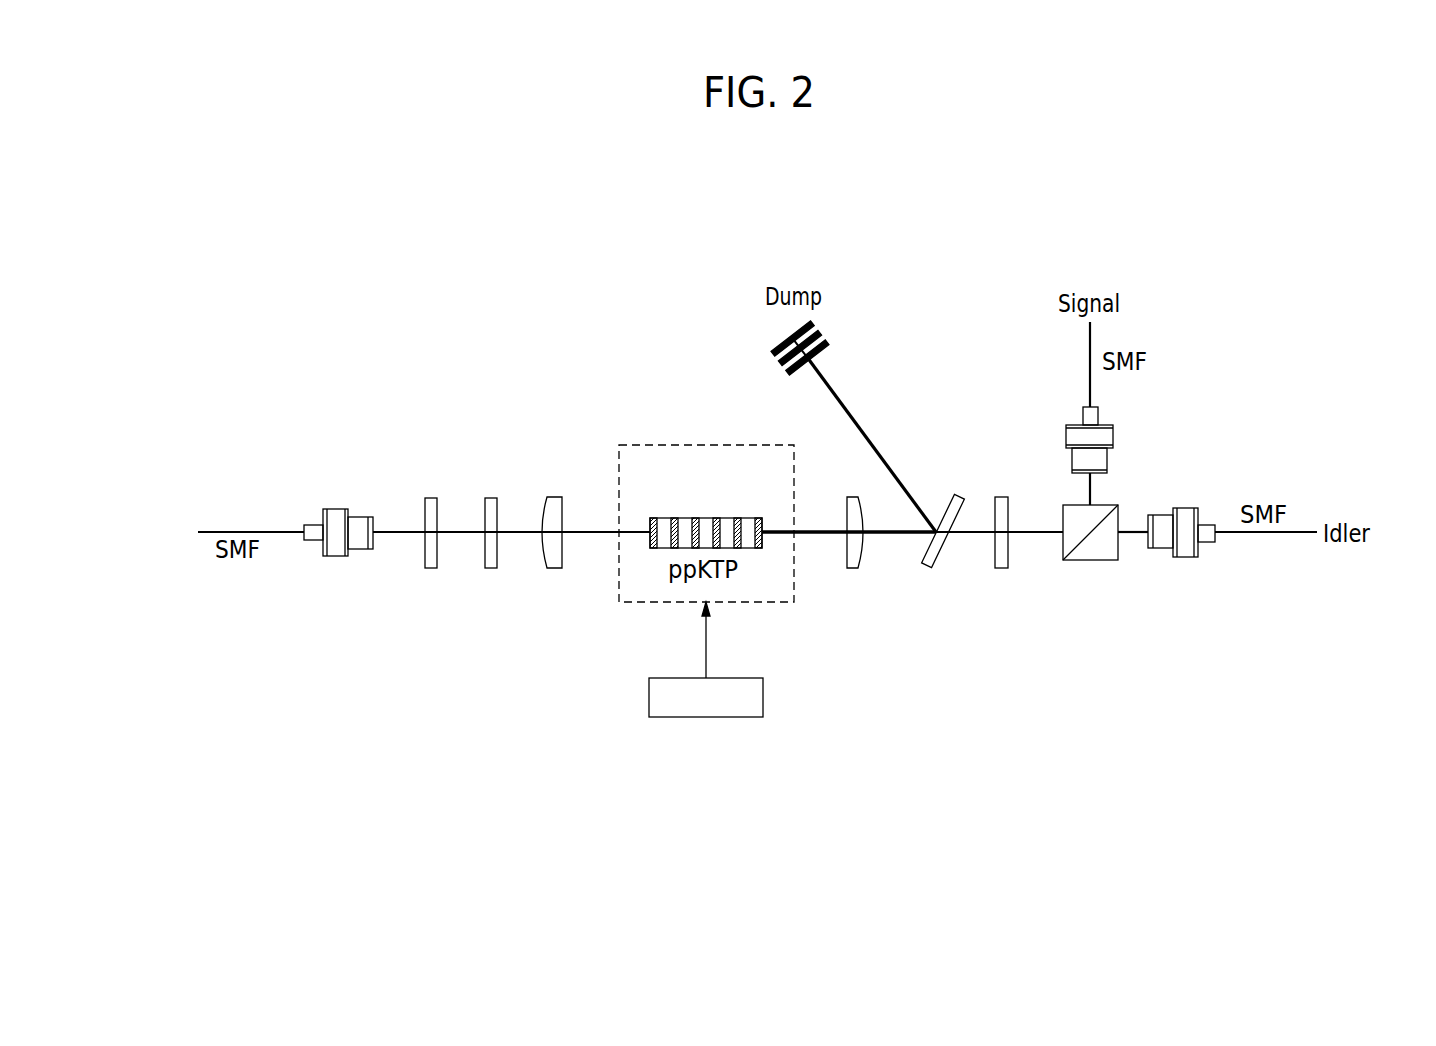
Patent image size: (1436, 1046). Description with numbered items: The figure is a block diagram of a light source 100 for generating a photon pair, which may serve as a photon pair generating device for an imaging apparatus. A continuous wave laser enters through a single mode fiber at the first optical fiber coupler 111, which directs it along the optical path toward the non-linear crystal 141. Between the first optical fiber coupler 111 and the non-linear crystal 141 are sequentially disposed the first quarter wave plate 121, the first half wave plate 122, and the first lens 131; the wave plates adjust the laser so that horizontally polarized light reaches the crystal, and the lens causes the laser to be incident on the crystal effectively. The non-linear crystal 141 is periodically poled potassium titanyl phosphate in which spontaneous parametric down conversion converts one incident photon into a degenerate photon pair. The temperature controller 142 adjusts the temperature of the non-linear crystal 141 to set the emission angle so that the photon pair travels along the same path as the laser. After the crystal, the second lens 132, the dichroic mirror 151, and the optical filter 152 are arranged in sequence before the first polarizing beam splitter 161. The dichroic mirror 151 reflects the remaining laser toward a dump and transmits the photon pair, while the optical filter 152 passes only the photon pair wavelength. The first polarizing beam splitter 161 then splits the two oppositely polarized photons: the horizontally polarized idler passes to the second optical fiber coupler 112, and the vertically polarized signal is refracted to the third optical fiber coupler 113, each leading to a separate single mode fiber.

The light source 100 is at (861, 245).
The first optical fiber coupler 111 is at (335, 508).
The second optical fiber coupler 112 is at (1185, 558).
The third optical fiber coupler 113 is at (1113, 437).
The first quarter wave plate 121 is at (430, 497).
The first half wave plate 122 is at (490, 497).
The first lens 131 is at (554, 496).
The second lens 132 is at (853, 570).
The non-linear crystal 141 is at (685, 517).
The temperature controller 142 is at (763, 697).
The dichroic mirror 151 is at (958, 490).
The optical filter 152 is at (1000, 570).
The first polarizing beam splitter 161 is at (1088, 562).